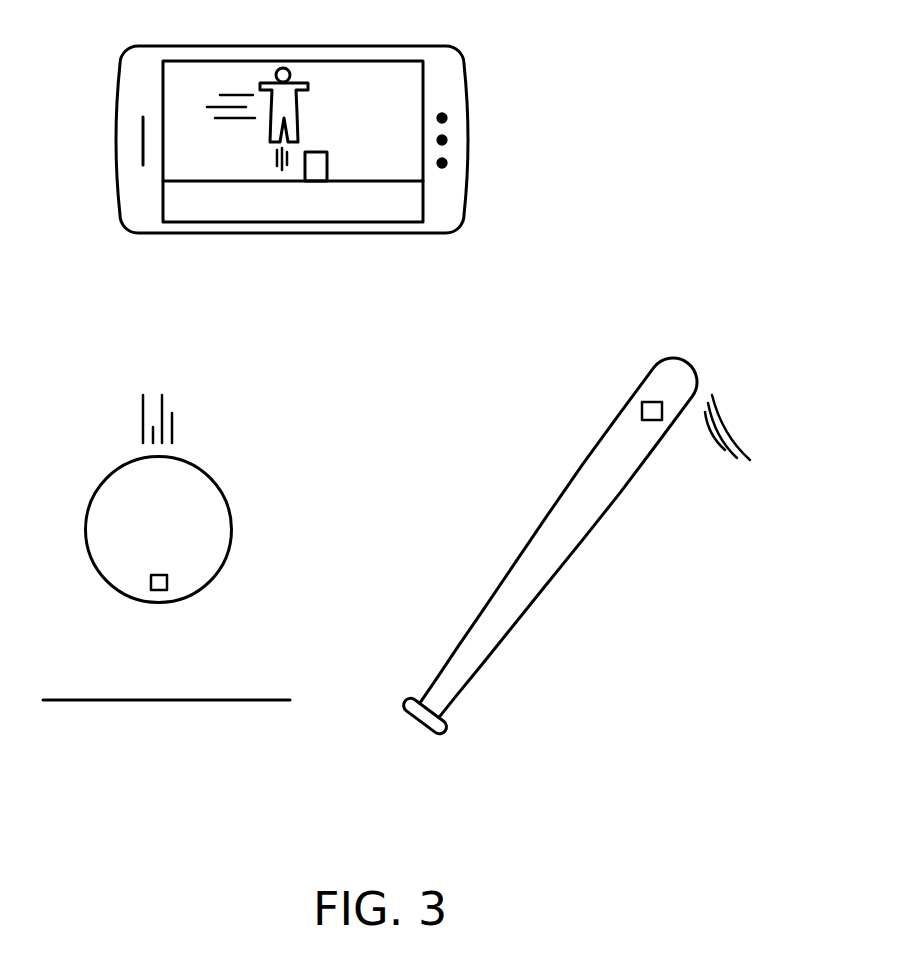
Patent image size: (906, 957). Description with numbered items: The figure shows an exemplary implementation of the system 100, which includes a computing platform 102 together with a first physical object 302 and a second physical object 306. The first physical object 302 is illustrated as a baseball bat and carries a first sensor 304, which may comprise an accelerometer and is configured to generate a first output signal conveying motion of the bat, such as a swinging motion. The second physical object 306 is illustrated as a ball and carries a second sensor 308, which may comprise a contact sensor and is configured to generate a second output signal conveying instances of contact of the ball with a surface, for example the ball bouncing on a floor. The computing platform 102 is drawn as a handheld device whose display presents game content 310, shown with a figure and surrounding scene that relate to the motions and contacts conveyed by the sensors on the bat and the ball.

The system 100 is at (660, 71).
The computing platform 102 is at (452, 70).
The display content 310 is at (402, 125).
The first physical object 302 is at (692, 369).
The first sensor 304 is at (641, 406).
The second physical object 306 is at (227, 497).
The second sensor 308 is at (153, 590).